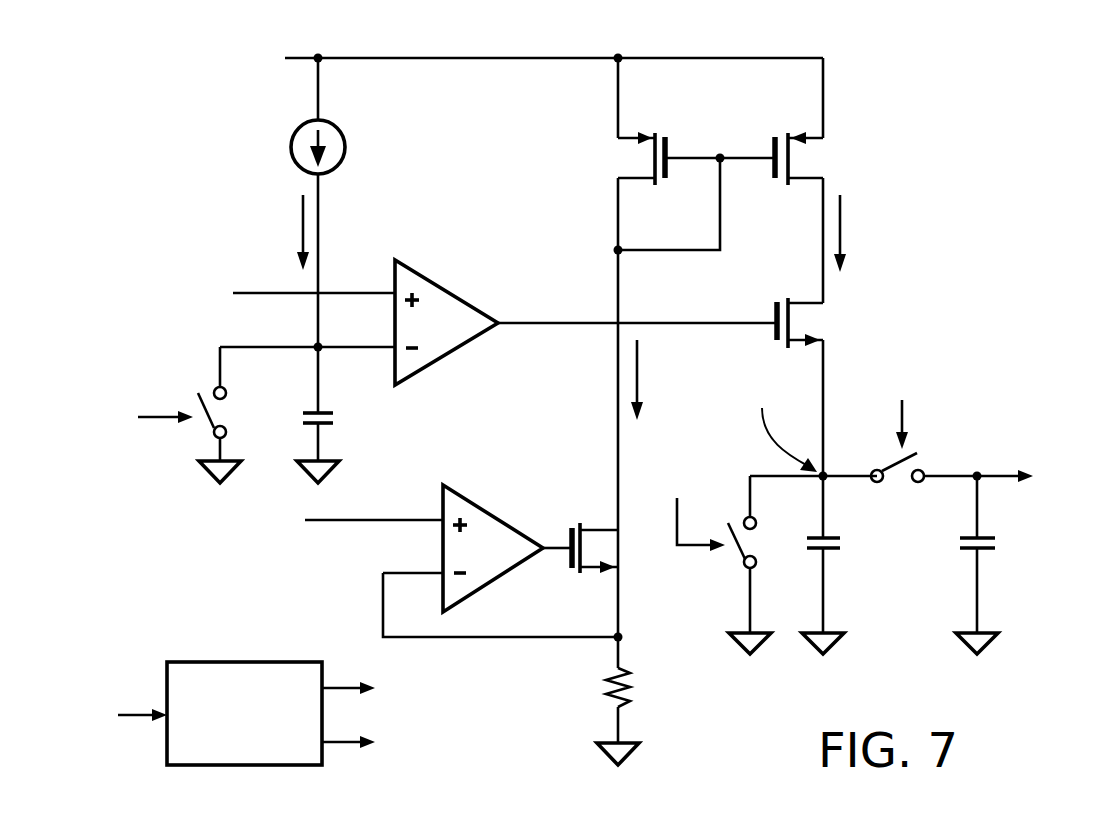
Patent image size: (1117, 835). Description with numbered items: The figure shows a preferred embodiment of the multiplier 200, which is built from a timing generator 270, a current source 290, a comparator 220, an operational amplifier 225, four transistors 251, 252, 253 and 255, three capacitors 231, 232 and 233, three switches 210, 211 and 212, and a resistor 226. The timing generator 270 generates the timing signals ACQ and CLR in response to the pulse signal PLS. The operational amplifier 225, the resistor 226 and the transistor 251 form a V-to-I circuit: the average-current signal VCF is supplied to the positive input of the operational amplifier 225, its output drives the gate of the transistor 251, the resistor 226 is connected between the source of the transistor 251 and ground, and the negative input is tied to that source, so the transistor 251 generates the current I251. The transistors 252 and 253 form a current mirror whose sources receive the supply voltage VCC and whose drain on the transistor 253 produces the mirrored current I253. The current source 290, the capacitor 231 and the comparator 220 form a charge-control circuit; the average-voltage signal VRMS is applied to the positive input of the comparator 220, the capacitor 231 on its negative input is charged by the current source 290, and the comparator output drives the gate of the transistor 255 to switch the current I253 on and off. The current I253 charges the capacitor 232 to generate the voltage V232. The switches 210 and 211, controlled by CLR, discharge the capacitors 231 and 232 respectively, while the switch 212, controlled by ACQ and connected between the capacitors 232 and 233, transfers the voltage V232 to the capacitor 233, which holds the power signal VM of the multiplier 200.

The multiplier 200 is at (992, 55).
The switch 210 is at (188, 393).
The switch 211 is at (733, 567).
The switch 212 is at (905, 487).
The comparator 220 is at (452, 285).
The operational amplifier 225 is at (470, 494).
The resistor 226 is at (598, 692).
The capacitor 231 is at (340, 421).
The capacitor 232 is at (841, 543).
The capacitor 233 is at (1003, 544).
The transistor 251 is at (580, 517).
The transistor 252 is at (622, 157).
The transistor 253 is at (828, 156).
The transistor 255 is at (828, 323).
The timing generator 270 is at (240, 657).
The current source 290 is at (352, 148).